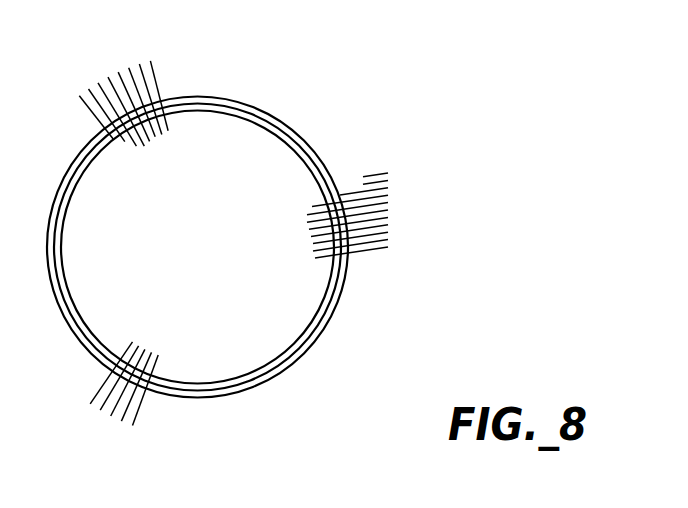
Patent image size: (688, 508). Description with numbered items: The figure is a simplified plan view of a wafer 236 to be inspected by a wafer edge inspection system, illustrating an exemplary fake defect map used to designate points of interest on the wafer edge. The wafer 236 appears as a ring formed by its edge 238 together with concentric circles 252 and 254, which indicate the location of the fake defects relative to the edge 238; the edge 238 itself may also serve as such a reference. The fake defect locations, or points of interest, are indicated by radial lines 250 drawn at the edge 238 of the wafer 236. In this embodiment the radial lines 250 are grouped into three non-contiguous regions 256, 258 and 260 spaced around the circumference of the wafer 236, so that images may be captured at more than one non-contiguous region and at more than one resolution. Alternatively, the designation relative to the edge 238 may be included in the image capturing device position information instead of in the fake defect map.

The wafer 236 is at (248, 228).
The edge 238 is at (345, 278).
The radial lines 250 is at (355, 182).
The concentric circle 252 is at (336, 303).
The concentric circle 254 is at (312, 332).
The non-contiguous region 256 is at (380, 177).
The non-contiguous region 258 is at (140, 424).
The non-contiguous region 260 is at (154, 59).